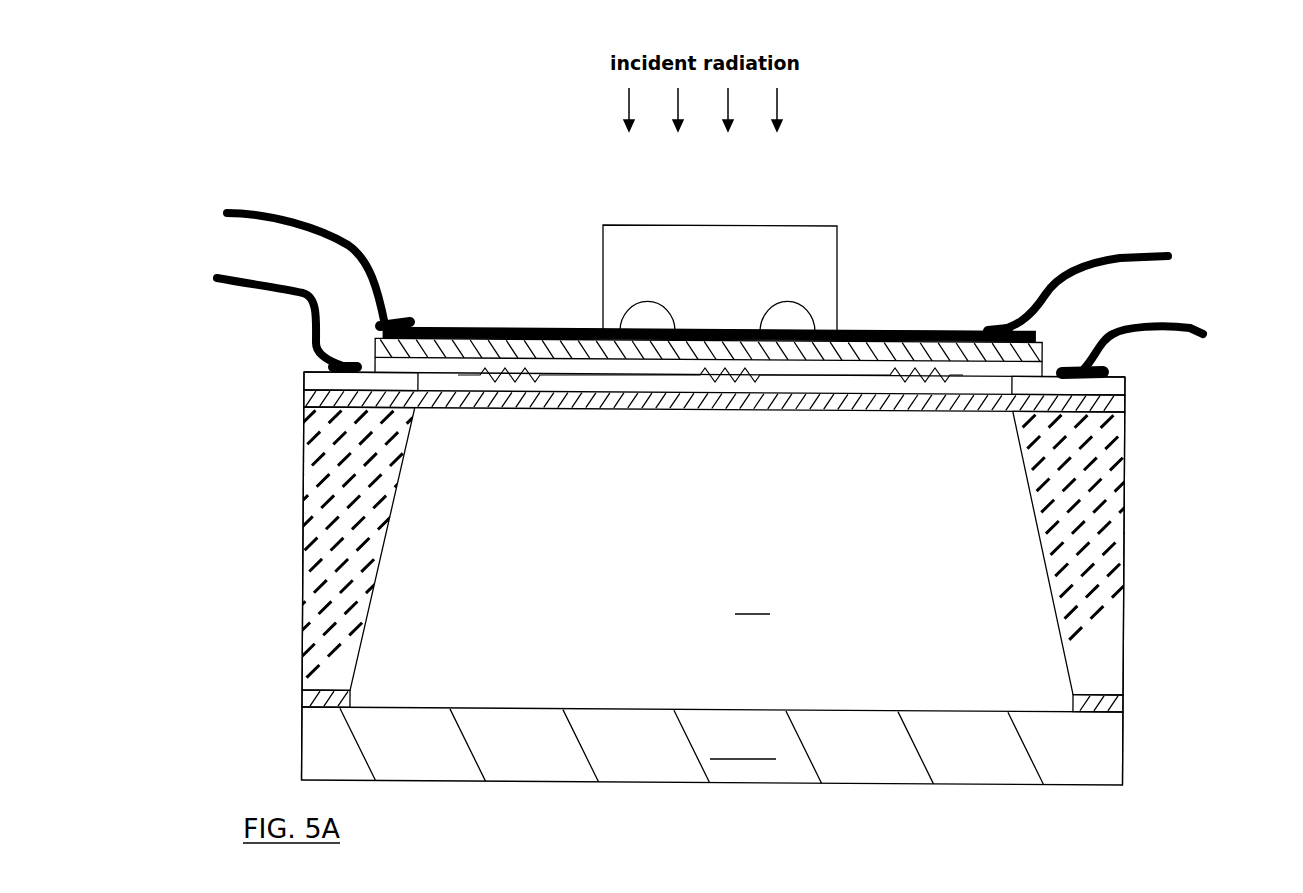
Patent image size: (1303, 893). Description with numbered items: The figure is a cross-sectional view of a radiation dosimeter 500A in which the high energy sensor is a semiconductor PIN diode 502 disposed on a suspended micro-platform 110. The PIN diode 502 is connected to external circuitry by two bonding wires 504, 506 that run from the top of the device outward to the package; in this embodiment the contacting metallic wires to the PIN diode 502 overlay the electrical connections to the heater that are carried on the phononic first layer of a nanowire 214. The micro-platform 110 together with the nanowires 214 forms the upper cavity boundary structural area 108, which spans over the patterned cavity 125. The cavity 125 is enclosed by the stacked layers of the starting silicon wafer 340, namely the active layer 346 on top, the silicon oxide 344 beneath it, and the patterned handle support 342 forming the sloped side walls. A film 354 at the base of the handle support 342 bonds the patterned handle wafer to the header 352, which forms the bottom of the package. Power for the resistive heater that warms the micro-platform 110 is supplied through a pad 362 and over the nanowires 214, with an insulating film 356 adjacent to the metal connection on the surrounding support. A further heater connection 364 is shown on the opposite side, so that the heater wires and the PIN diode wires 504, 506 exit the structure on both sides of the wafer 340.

The photodetector device 500A is at (132, 92).
The upper cavity boundary structural area 108 is at (1013, 437).
The micro-platform 110 is at (830, 413).
The patterned cavity 125 is at (721, 603).
The nanowire 214 is at (493, 360).
The starting silicon wafer 340 is at (1150, 380).
The handle support 342 is at (304, 497).
The silicon oxide 344 is at (304, 398).
The active layer 346 is at (302, 373).
The header 352 is at (302, 748).
The film 354 is at (302, 690).
The insulating film 356 is at (1045, 349).
The pad 362 is at (310, 292).
The heater wire bond 364 is at (1175, 322).
The semiconductor PIN diode 502 is at (838, 246).
The bonding wire 504 is at (253, 212).
The bonding wire 506 is at (1060, 277).